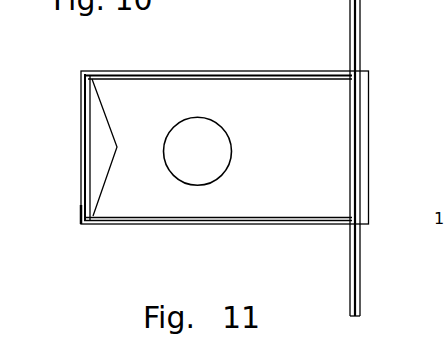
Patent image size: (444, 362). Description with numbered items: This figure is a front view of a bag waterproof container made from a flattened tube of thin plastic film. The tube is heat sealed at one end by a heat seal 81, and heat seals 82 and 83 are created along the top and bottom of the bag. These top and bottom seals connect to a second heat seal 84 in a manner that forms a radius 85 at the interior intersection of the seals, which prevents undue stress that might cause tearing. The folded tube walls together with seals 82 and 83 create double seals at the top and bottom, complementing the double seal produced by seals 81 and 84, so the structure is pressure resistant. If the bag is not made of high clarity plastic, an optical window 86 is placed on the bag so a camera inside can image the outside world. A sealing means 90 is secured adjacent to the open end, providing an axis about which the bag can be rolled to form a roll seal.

The heat seal at one end 81 is at (81, 153).
The top heat seal 82 is at (254, 73).
The bottom heat seal 83 is at (152, 224).
The second heat seal 84 is at (81, 213).
The radius 85 is at (117, 147).
The optical window 86 is at (198, 140).
The sealing means 90 is at (360, 15).